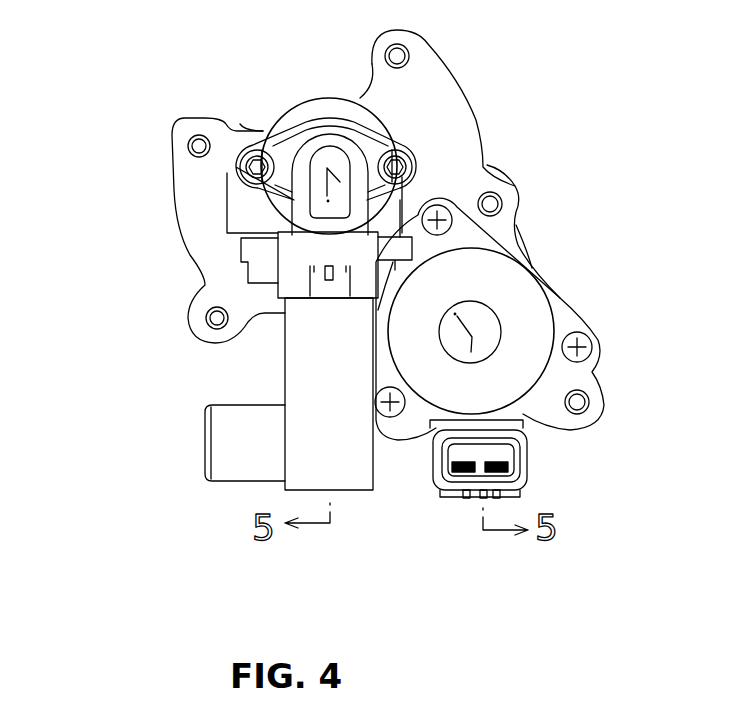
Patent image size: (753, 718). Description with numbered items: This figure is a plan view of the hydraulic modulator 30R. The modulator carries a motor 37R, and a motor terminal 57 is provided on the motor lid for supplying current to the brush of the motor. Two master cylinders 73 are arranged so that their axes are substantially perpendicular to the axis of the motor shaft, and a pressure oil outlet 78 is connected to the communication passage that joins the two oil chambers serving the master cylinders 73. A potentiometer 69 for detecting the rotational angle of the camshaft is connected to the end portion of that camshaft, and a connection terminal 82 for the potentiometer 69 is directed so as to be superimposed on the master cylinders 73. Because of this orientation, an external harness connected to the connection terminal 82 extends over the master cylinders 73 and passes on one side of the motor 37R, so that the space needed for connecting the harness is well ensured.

The hydraulic modulator 30R is at (147, 186).
The potentiometer 69 is at (330, 128).
The connection terminal 82 is at (298, 222).
The motor 37R is at (557, 308).
The master cylinders 73 is at (351, 478).
The pressure oil outlet 78 is at (205, 442).
The motor terminal 57 is at (527, 458).